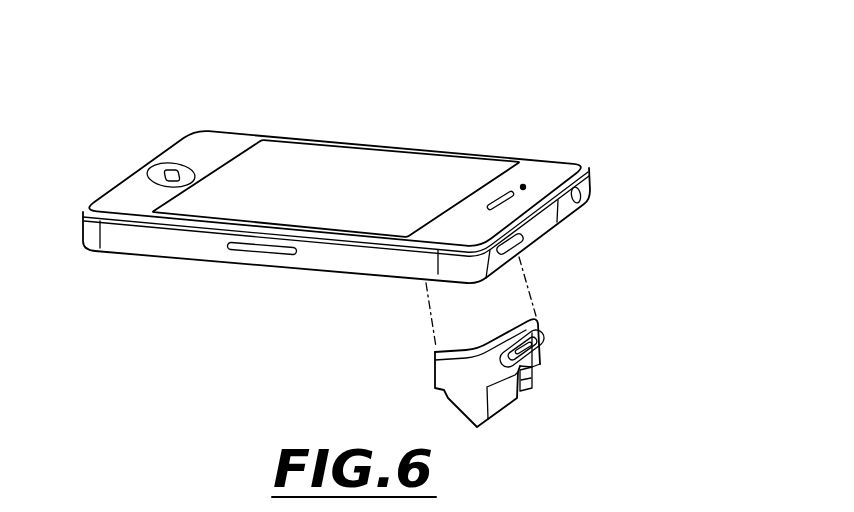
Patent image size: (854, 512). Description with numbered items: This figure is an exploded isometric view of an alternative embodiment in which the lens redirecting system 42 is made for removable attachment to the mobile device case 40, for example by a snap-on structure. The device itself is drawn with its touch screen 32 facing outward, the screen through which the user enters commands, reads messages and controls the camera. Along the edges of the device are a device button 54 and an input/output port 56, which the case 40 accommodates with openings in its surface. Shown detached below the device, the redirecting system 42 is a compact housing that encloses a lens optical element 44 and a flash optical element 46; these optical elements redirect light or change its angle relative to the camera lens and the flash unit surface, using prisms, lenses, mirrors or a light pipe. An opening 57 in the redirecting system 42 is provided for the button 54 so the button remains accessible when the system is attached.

The touch screen 32 is at (367, 168).
The detachable mobile device case 40 is at (514, 150).
The lens redirecting system 42 is at (489, 381).
The lens optical element 44 is at (498, 400).
The flash optical element 46 is at (536, 378).
The device button 54 is at (521, 241).
The input/output port 56 is at (588, 198).
The opening 57 is at (529, 348).